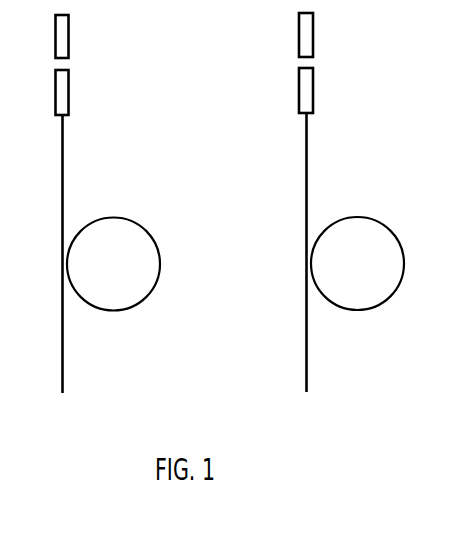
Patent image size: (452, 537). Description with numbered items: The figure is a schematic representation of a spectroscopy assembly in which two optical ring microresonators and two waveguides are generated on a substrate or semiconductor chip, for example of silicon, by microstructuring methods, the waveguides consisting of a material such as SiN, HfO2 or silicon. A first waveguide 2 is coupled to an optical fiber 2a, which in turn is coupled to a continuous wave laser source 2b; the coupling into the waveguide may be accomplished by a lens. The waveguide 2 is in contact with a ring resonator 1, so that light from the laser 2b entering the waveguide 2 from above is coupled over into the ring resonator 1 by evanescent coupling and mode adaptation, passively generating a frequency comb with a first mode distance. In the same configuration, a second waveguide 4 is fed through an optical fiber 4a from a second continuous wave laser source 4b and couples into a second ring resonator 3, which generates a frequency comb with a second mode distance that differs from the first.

The optical ring microresonator 1 is at (119, 276).
The waveguide 2 is at (60, 163).
The optical fiber 2a is at (70, 90).
The continuous wave laser source 2b is at (70, 33).
The second ring resonator 3 is at (363, 275).
The waveguide 4 is at (304, 163).
The optical fiber 4a is at (314, 88).
The continuous wave laser source 4b is at (314, 33).